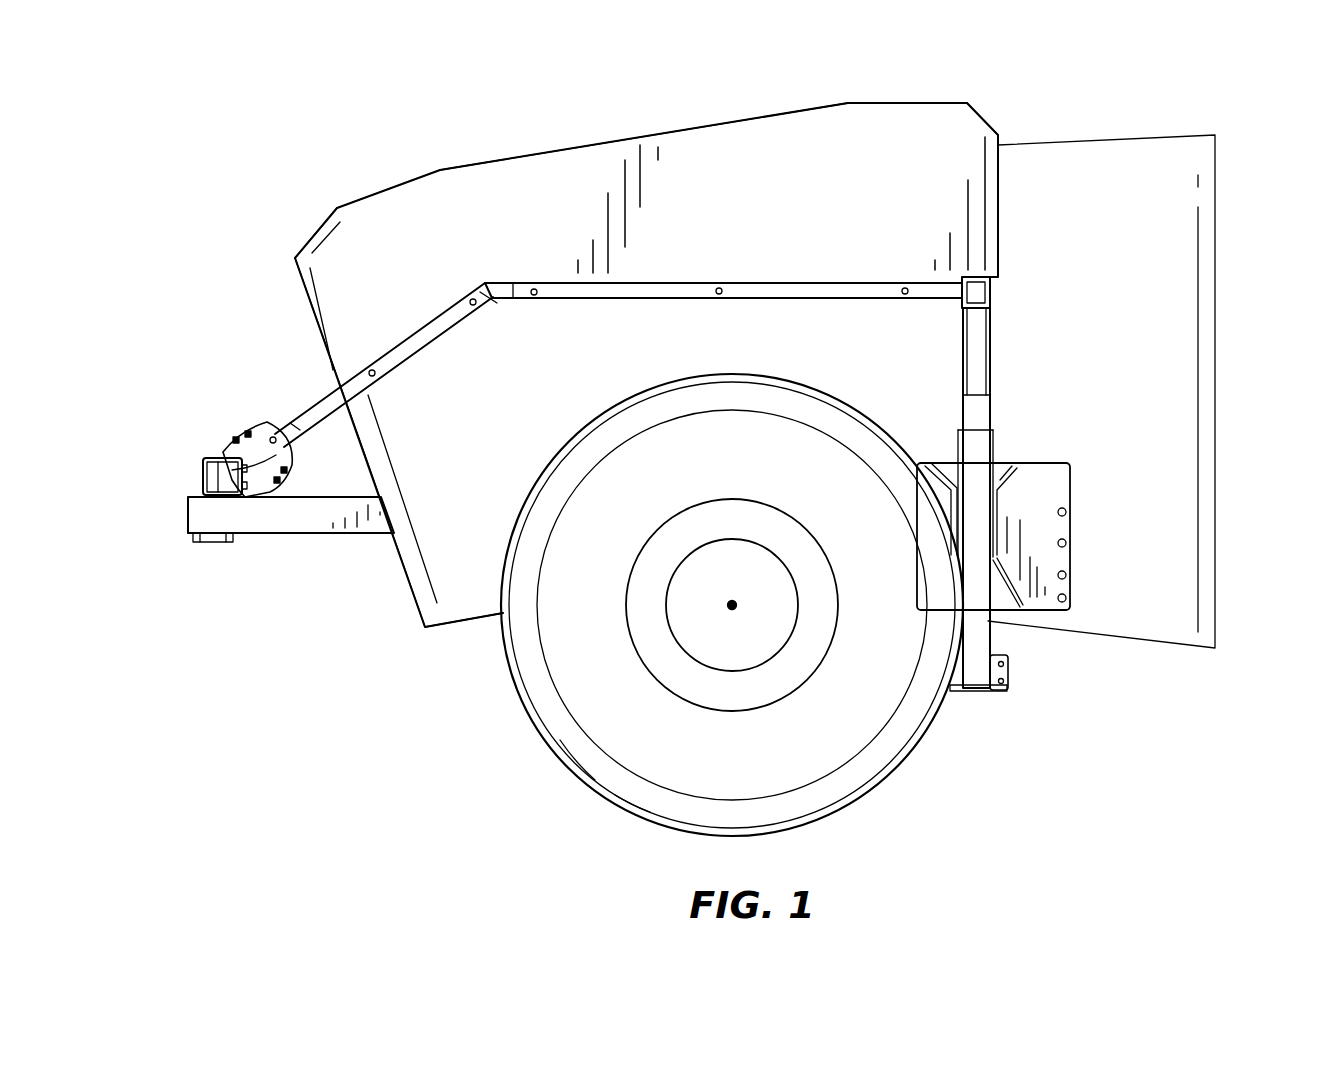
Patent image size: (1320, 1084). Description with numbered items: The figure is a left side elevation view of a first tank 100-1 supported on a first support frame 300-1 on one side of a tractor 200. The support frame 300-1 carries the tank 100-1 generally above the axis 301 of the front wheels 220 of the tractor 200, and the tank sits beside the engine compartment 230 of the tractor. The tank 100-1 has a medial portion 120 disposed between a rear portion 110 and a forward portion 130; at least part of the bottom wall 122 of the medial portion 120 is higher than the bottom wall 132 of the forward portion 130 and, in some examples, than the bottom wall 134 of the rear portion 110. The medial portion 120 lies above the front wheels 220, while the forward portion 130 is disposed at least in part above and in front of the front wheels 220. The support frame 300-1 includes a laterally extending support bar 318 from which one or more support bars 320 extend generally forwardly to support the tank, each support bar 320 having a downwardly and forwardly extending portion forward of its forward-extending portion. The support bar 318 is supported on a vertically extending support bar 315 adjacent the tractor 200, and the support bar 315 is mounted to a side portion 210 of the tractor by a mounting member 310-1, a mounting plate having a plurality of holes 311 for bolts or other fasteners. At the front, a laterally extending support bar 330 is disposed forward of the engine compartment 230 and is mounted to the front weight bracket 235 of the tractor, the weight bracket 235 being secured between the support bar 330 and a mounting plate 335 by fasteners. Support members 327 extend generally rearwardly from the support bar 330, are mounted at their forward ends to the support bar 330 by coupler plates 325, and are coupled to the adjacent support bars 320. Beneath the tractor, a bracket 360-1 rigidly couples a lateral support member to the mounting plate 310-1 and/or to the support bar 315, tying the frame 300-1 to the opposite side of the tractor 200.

The first tank 100-1 is at (737, 211).
The rear portion 110 is at (1000, 163).
The medial portion 120 is at (533, 195).
The forward portion 130 is at (300, 287).
The bottom wall of medial portion 122 is at (684, 297).
The bottom wall of forward portion 132 is at (396, 369).
The bottom wall of rearward portion 134 is at (880, 297).
The tractor 200 is at (1262, 173).
The side portion 210 is at (1145, 617).
The front wheels 220 is at (878, 785).
The engine compartment 230 is at (463, 592).
The front weight bracket 235 is at (323, 537).
The first support frame 300-1 is at (444, 545).
The axis of the front wheels 301 is at (738, 607).
The mounting member 310-1 is at (1037, 473).
The holes 311 is at (1067, 543).
The vertical support bar 315 is at (992, 365).
The laterally extending support bar 318 is at (998, 290).
The support bar 320 is at (557, 300).
The coupler plate 325 is at (228, 447).
The support member 327 is at (288, 420).
The laterally extending support bar 330 is at (203, 475).
The mounting plate 335 is at (198, 542).
The bracket 360-1 is at (1010, 672).